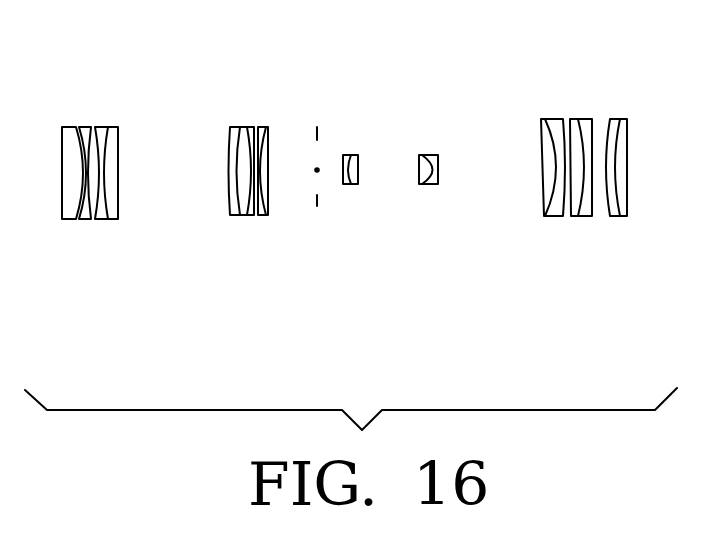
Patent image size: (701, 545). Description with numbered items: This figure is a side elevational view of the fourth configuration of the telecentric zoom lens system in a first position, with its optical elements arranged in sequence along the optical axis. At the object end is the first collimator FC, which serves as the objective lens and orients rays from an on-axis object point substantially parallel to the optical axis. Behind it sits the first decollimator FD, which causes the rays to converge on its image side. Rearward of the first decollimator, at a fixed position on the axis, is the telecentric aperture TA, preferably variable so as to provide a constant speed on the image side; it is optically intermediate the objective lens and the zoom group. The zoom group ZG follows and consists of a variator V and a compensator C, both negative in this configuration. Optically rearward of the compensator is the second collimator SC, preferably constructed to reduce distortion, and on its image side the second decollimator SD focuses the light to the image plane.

The first collimator FC is at (122, 92).
The first decollimator FD is at (282, 247).
The telecentric aperture TA is at (317, 126).
The variator V is at (349, 147).
The compensator C is at (441, 219).
The zoom group ZG is at (403, 205).
The second collimator SC is at (595, 73).
The second decollimator SD is at (643, 233).